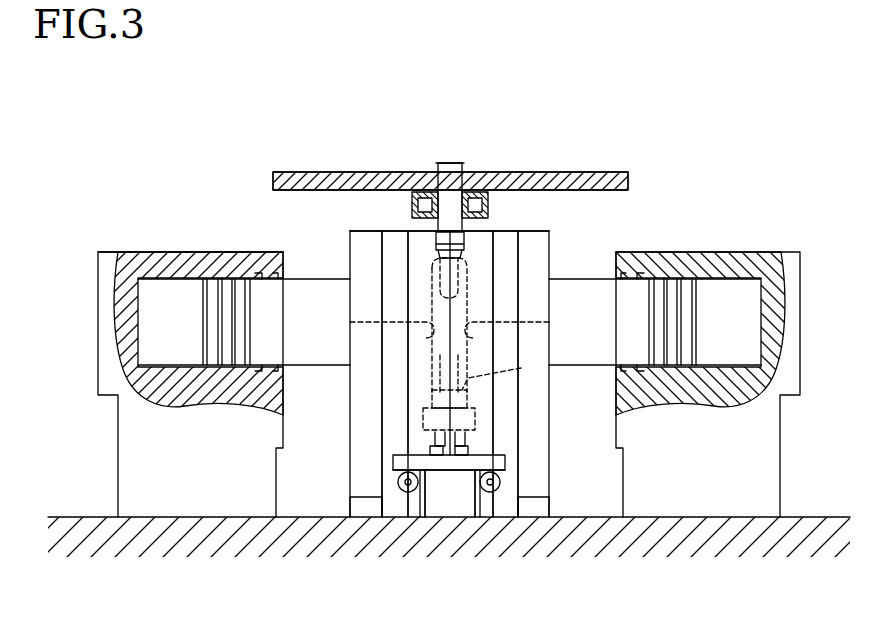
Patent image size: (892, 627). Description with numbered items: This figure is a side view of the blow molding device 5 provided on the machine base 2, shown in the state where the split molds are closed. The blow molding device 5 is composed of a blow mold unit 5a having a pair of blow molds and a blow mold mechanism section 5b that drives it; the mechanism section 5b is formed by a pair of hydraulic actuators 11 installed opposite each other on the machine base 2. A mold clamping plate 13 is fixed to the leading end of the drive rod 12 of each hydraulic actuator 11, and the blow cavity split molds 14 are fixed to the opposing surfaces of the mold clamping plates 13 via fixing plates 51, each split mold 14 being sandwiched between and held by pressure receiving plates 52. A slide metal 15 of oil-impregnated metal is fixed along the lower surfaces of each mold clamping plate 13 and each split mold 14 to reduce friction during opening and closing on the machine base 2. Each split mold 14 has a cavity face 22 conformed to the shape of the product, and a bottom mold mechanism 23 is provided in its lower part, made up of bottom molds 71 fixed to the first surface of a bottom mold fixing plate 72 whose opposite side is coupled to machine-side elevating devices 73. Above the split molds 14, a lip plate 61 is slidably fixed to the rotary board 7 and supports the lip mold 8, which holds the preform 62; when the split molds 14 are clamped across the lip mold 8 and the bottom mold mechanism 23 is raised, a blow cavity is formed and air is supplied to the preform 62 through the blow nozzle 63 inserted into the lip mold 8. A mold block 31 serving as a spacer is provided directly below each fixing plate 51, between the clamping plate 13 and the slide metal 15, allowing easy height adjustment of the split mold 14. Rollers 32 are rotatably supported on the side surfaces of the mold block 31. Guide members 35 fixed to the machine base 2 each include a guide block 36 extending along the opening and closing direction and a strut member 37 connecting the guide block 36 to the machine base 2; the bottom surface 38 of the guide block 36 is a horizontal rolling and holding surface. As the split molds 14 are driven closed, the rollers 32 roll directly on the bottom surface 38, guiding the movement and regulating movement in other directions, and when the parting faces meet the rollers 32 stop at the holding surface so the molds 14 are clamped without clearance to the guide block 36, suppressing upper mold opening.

The machine base 2 is at (822, 517).
The blow molding device 5 is at (504, 138).
The blow mold unit 5a is at (568, 229).
The blow mold mechanism section 5b is at (229, 226).
The rotary board 7 is at (571, 180).
The lip mold 8 is at (436, 200).
The hydraulic actuator 11 is at (177, 256).
The drive rod 12 is at (296, 290).
The mold clamping plate 13 is at (369, 245).
The blow cavity split mold 14 is at (400, 242).
The slide metal 15 is at (362, 505).
The cavity face 22 is at (450, 325).
The bottom mold mechanism 23 is at (504, 371).
The mold block 31 is at (390, 500).
The roller 32 is at (405, 495).
The guide member 35 is at (484, 448).
The guide block 36 is at (415, 462).
The strut member 37 is at (450, 503).
The bottom surface 38 is at (426, 500).
The fixing plate 51 is at (395, 375).
The pressure receiving plate 52 is at (415, 290).
The lip plate 61 is at (408, 195).
The preform 62 is at (467, 277).
The blow nozzle 63 is at (450, 178).
The bottom mold 71 is at (461, 388).
The bottom mold fixing plate 72 is at (426, 408).
The elevating device 73 is at (462, 458).